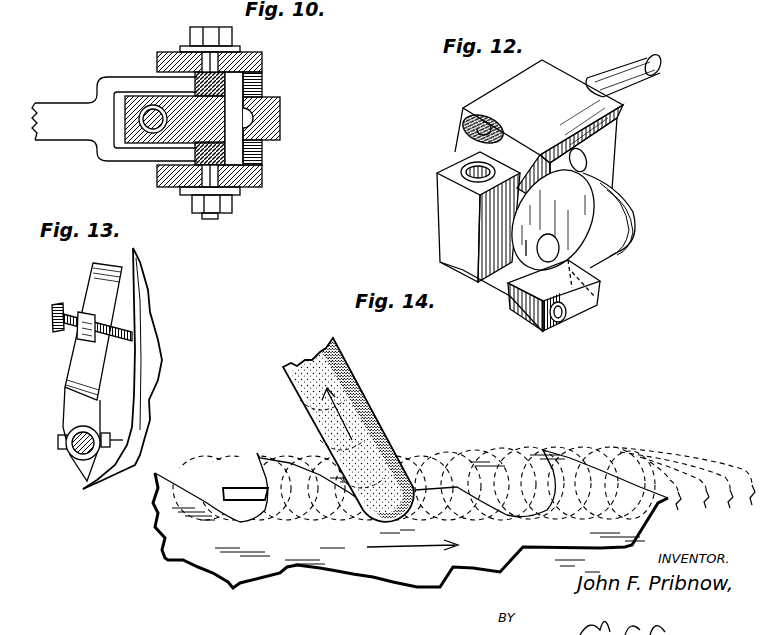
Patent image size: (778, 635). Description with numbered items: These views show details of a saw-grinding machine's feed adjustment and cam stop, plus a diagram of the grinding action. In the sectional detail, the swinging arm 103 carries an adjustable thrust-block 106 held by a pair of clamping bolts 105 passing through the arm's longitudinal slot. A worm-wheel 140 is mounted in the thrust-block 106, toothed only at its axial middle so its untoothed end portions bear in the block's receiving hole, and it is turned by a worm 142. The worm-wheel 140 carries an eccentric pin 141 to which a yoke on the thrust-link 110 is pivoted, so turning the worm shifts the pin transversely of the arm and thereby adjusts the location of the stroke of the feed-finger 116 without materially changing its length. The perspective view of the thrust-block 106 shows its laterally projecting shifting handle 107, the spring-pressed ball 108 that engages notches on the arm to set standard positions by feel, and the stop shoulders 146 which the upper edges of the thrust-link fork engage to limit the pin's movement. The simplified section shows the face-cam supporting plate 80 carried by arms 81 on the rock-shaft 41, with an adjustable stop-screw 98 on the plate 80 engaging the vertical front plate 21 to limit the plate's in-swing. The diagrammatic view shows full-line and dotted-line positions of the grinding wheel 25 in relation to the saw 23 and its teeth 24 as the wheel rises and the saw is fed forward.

In FIG. 13, the vertical front plate 21 is at (138, 306).
In FIG. 14, the saw 23 is at (340, 560).
In FIG. 14, the saw teeth 24 is at (160, 477).
In FIG. 14, the grinding wheel 25 is at (360, 397).
In FIG. 13, the rock-shaft 41 is at (80, 456).
In FIG. 13, the supporting plate 80 is at (78, 358).
In FIG. 13, the arms 81 is at (67, 417).
In FIG. 13, the adjustable stop-screw 98 is at (80, 318).
In FIG. 10, the swinging arm 103 is at (263, 60).
In FIG. 10, the clamping bolts 105 is at (212, 214).
In FIG. 10, the thrust-block 106 is at (112, 148).
In FIG. 12, the thrust-block 106 is at (553, 83).
In FIG. 12, the shifting handle 107 is at (657, 70).
In FIG. 12, the spring-pressed ball 108 is at (465, 118).
In FIG. 10, the thrust-link 110 is at (82, 128).
In FIG. 14, the feed-finger 116 is at (250, 493).
In FIG. 10, the worm-wheel 140 is at (277, 97).
In FIG. 12, the worm-wheel 140 is at (570, 193).
In FIG. 10, the eccentric pin 141 is at (235, 153).
In FIG. 12, the eccentric pin 141 is at (550, 250).
In FIG. 10, the worm 142 is at (153, 123).
In FIG. 12, the stop shoulders 146 is at (453, 157).